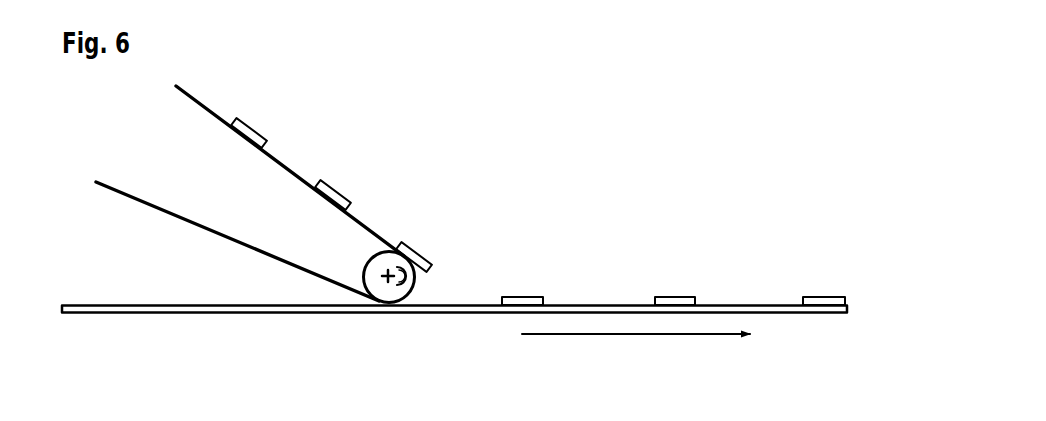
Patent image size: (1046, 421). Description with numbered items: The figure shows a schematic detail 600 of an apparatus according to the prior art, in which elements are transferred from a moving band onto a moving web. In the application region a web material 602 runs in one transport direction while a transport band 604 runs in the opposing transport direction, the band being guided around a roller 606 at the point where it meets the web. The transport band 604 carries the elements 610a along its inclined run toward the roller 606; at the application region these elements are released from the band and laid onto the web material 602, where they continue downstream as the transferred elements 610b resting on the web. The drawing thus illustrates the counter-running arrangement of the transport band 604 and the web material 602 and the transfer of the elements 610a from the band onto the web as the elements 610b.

The detail of an apparatus 600 is at (678, 88).
The web material 602 is at (97, 292).
The transport band 604 is at (126, 180).
The roller 606 is at (387, 216).
The elements 610a is at (423, 240).
The chips transferred onto substrate 610b is at (823, 282).